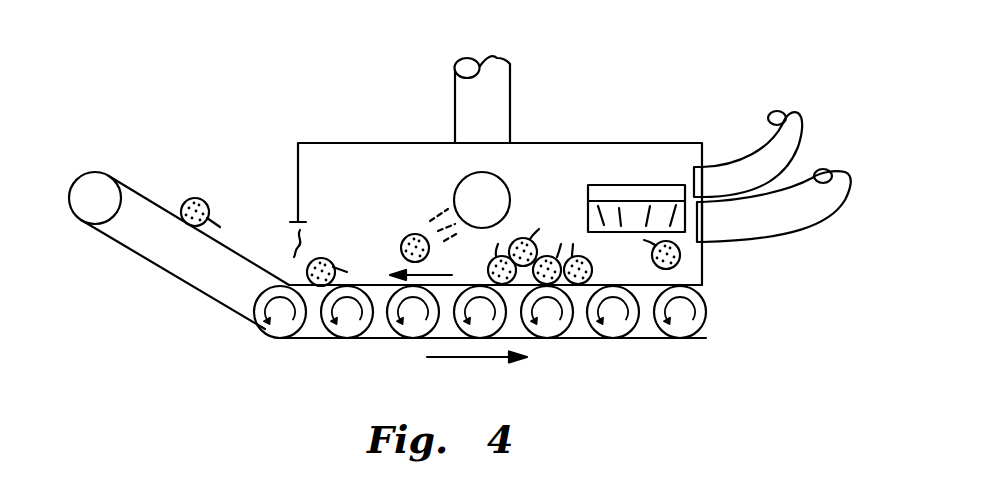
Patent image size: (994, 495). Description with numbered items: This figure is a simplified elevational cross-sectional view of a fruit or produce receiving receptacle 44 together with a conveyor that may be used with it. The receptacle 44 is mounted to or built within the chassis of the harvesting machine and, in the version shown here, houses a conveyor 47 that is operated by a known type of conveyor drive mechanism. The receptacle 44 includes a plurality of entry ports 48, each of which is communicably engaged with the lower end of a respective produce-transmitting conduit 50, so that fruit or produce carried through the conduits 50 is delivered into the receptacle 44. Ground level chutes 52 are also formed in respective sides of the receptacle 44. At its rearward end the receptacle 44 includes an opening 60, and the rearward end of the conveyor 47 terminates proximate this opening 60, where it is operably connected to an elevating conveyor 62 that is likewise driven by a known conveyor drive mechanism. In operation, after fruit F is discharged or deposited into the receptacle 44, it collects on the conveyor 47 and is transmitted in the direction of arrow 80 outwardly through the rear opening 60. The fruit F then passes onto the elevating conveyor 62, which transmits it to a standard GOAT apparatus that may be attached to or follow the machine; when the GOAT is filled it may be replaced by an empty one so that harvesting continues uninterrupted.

The receptacle 44 is at (621, 143).
The conveyor 47 is at (703, 278).
The entry ports 48 is at (466, 178).
The produce-transmitting conduits 50 is at (455, 105).
The ground level chutes 52 is at (665, 185).
The opening 60 is at (298, 240).
The elevating conveyor 62 is at (207, 298).
The arrow 80 is at (450, 275).
The fruit F is at (337, 258).